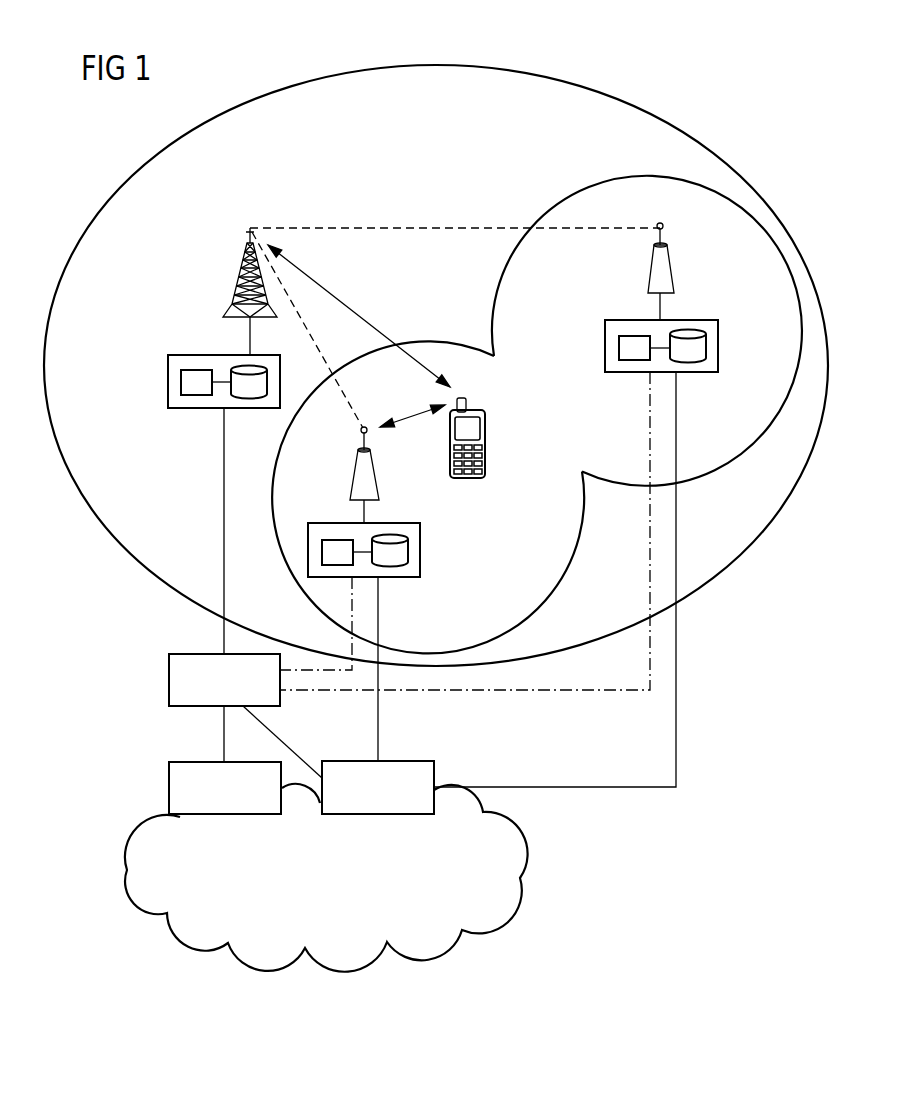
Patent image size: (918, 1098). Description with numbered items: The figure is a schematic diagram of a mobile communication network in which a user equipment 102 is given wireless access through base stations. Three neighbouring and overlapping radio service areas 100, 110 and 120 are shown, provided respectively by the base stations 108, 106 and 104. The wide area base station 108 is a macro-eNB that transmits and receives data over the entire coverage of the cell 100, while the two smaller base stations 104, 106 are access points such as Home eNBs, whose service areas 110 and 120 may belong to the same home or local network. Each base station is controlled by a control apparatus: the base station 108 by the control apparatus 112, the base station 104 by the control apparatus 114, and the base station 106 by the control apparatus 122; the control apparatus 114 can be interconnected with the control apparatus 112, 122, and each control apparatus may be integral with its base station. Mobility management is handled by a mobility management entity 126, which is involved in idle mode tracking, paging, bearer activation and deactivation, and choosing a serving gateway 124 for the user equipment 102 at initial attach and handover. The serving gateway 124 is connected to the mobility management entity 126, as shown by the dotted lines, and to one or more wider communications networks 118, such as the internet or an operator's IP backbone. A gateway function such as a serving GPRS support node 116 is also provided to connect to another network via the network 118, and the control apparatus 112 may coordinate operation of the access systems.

The radio service area 100 is at (420, 64).
The user equipment 102 is at (486, 445).
The base station 104 is at (379, 470).
The base station 106 is at (672, 270).
The wide area base station 108 is at (238, 276).
The radio service area 110 is at (583, 181).
The control apparatus 112 is at (168, 380).
The control apparatus 114 is at (420, 550).
The serving GPRS support node 116 is at (168, 785).
The wider communications network 118 is at (125, 872).
The radio service area 120 is at (438, 345).
The control apparatus 122 is at (718, 345).
The serving gateway 124 is at (406, 760).
The mobility management entity 126 is at (168, 676).